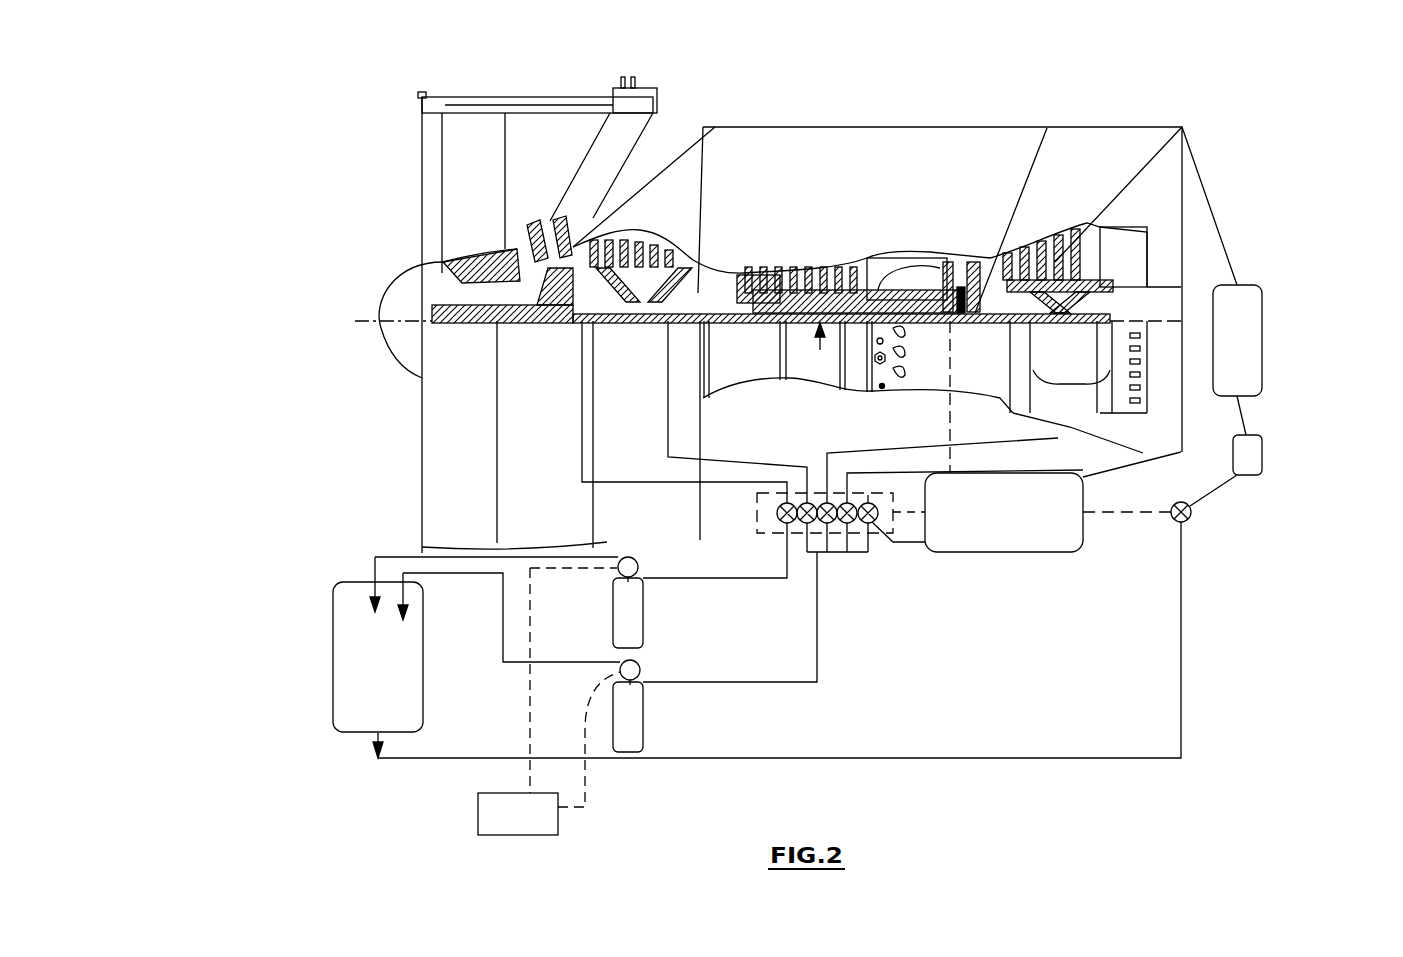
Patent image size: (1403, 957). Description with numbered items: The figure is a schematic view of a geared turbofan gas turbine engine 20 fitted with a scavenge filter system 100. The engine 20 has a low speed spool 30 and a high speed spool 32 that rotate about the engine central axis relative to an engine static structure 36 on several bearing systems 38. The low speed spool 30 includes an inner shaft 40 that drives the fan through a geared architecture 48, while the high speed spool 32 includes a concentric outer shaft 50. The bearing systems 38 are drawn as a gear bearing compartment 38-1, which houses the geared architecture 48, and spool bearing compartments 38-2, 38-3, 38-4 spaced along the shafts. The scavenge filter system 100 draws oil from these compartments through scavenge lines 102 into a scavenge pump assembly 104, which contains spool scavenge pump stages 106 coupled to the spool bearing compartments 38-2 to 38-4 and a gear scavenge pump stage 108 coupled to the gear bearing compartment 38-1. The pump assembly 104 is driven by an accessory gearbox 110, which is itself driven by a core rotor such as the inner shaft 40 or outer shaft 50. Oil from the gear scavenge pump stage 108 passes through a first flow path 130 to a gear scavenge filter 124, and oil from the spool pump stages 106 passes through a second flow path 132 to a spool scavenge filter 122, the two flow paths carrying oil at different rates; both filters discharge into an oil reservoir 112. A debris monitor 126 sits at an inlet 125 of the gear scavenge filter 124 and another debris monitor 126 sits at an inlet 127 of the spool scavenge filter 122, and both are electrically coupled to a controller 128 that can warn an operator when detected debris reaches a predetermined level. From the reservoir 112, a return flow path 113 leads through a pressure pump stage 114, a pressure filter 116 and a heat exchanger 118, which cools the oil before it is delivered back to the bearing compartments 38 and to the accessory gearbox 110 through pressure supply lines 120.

The gas turbine engine 20 is at (960, 147).
The low speed spool 30 is at (822, 390).
The high speed spool 32 is at (855, 265).
The engine static structure 36 is at (852, 405).
The bearing systems 38 is at (990, 323).
The gear bearing compartment 38-1 is at (613, 363).
The spool bearing compartment 38-2 is at (753, 413).
The spool bearing compartment 38-3 is at (1007, 220).
The spool bearing compartment 38-4 is at (1067, 384).
The inner shaft 40 is at (707, 395).
The geared architecture 48 is at (565, 308).
The outer shaft 50 is at (905, 327).
The scavenge filter system 100 is at (322, 456).
The scavenge lines 102 is at (1129, 483).
The scavenge pump assembly 104 is at (885, 548).
The spool scavenge pump stages 106 is at (868, 503).
The gear scavenge pump stage 108 is at (780, 520).
The accessory gearbox 110 is at (1037, 552).
The oil reservoir 112 is at (333, 655).
The return flow path 113 is at (1013, 770).
The pressure pump stage 114 is at (1192, 512).
The pressure filter 116 is at (1262, 455).
The heat exchanger 118 is at (1262, 345).
The pressure supply lines 120 is at (703, 140).
The spool scavenge filter 122 is at (643, 718).
The gear scavenge filter 124 is at (643, 625).
The inlet of the gear scavenge filter 125 is at (632, 588).
The debris monitors 126 is at (633, 557).
The inlet of the spool scavenge filter 127 is at (634, 690).
The controller 128 is at (478, 817).
The first flow path 130 is at (758, 580).
The second flow path 132 is at (817, 637).